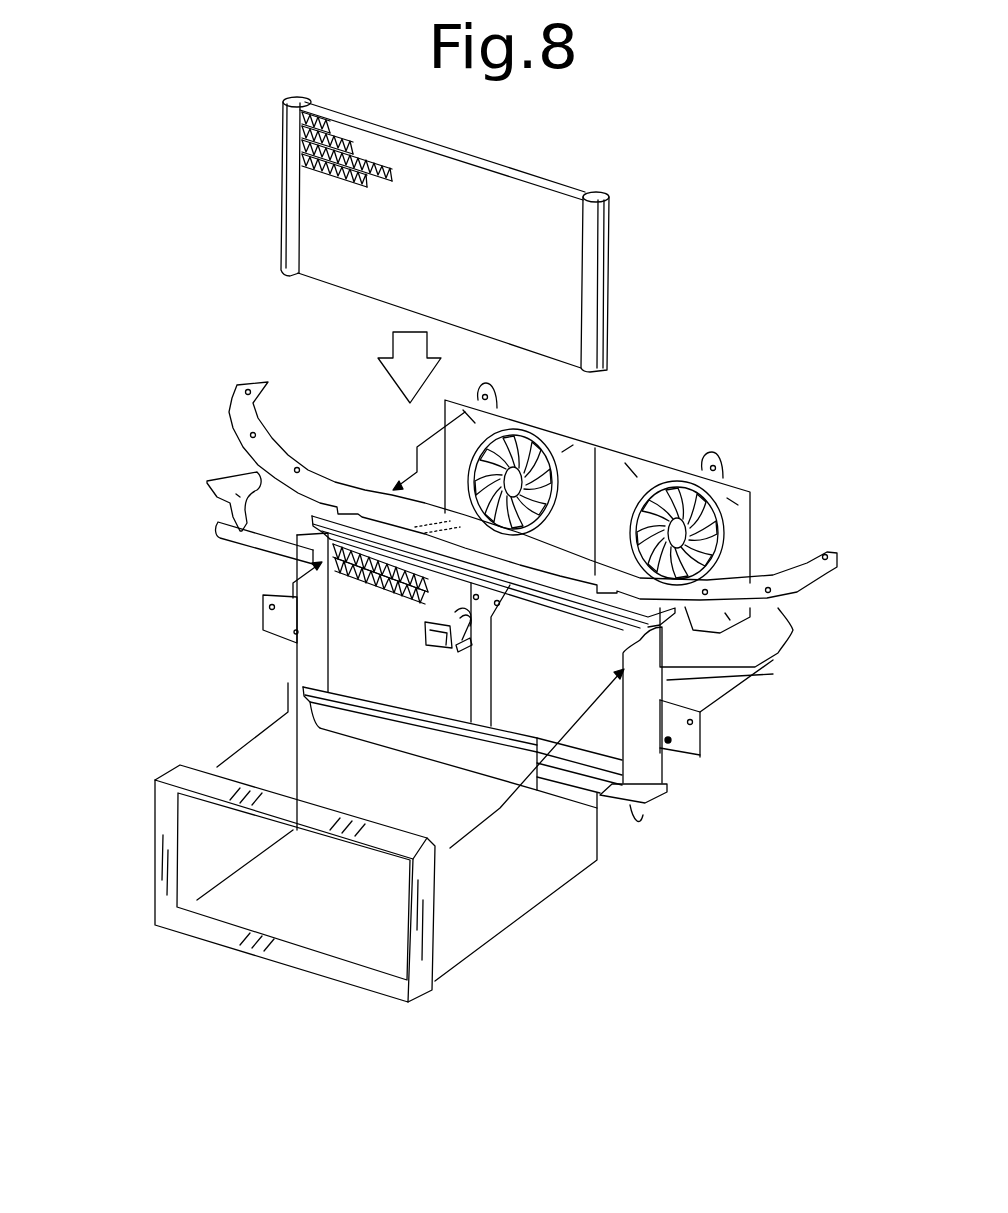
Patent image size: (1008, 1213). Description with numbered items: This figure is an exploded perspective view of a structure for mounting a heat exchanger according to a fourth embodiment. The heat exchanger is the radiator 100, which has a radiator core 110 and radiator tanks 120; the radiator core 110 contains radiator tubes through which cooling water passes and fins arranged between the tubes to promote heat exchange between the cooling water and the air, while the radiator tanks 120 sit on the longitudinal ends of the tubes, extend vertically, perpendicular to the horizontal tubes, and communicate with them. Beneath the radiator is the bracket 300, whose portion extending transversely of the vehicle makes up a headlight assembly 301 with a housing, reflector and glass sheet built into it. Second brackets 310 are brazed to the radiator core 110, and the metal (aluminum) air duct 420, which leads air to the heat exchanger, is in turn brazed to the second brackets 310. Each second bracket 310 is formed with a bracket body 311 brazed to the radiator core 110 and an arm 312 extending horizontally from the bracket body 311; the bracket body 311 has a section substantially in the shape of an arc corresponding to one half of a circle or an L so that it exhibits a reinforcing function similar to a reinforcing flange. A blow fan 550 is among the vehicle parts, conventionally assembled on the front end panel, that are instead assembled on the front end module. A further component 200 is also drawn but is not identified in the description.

The radiator 100 is at (272, 689).
The radiator core 110 is at (433, 587).
The radiator tanks 120 is at (550, 580).
The radiator 200 is at (567, 280).
The bracket 300 is at (277, 447).
The headlight assembly 301 is at (207, 480).
The second brackets 310 is at (210, 541).
The bracket body 311 is at (313, 650).
The arm 312 is at (263, 560).
The air duct 420 is at (418, 987).
The blow fan 550 is at (618, 456).